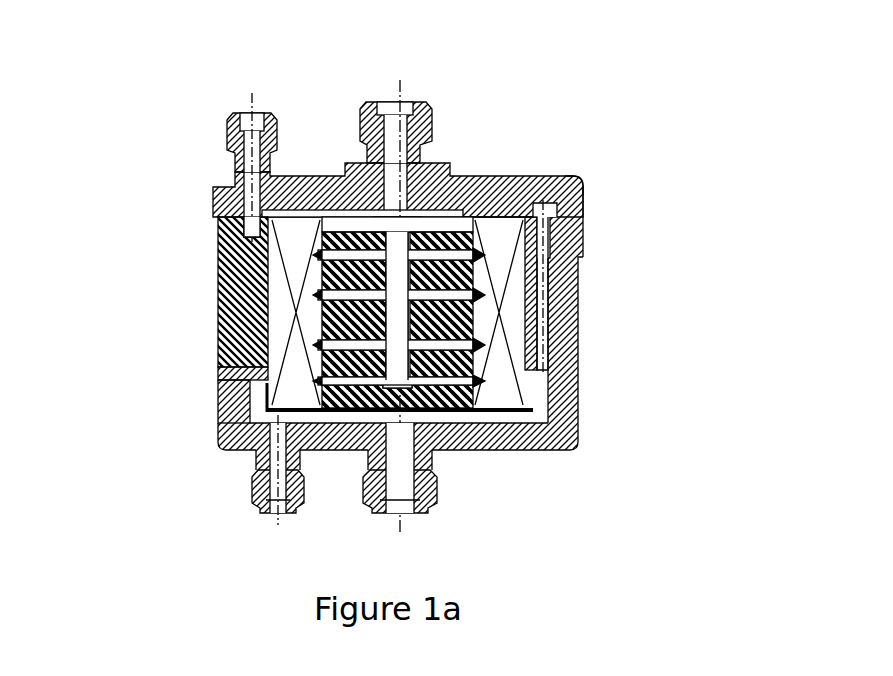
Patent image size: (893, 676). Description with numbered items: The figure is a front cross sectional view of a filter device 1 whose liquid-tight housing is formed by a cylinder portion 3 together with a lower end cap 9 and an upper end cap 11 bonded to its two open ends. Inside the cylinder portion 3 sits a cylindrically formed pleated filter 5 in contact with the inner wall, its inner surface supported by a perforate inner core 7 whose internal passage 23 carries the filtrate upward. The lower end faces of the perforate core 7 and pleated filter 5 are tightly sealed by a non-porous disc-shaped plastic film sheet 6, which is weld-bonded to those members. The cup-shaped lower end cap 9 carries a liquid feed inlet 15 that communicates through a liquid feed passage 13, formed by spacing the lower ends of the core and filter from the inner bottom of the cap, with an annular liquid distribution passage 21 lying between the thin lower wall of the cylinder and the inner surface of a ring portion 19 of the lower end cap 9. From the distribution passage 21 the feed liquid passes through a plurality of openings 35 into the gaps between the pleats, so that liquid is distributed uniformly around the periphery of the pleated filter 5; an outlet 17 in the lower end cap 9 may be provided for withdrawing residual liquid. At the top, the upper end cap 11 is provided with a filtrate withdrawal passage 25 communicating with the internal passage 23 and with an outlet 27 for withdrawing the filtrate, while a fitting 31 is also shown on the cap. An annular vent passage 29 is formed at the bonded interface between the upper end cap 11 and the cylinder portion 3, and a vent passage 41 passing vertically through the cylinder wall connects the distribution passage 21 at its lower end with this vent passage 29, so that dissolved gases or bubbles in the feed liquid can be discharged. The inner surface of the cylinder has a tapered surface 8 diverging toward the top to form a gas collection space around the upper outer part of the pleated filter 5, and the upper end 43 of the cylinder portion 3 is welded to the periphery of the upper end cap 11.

The electrochemical cell assembly 1 is at (412, 286).
The cylinder portion 3 is at (578, 313).
The pleated filter 5 is at (283, 317).
The non-porous disc-shaped plastic film sheet 6 is at (358, 412).
The perforate inner core 7 is at (448, 213).
The tapered surface 8 is at (512, 213).
The lower end cap 9 is at (578, 427).
The upper end cap 11 is at (578, 178).
The liquid feed passage 13 is at (492, 415).
The liquid feed inlet 15 is at (407, 515).
The outlet 17 is at (278, 512).
The ring portion 19 is at (220, 382).
The annular liquid distribution passage 21 is at (220, 420).
The internal passage 23 is at (390, 273).
The filtrate withdrawal passage 25 is at (398, 163).
The outlet 27 is at (396, 93).
The annular vent passage 29 is at (580, 187).
The top side fitting 31 is at (250, 107).
The openings 35 is at (222, 400).
The vent passage 41 is at (552, 265).
The upper end 43 is at (563, 207).